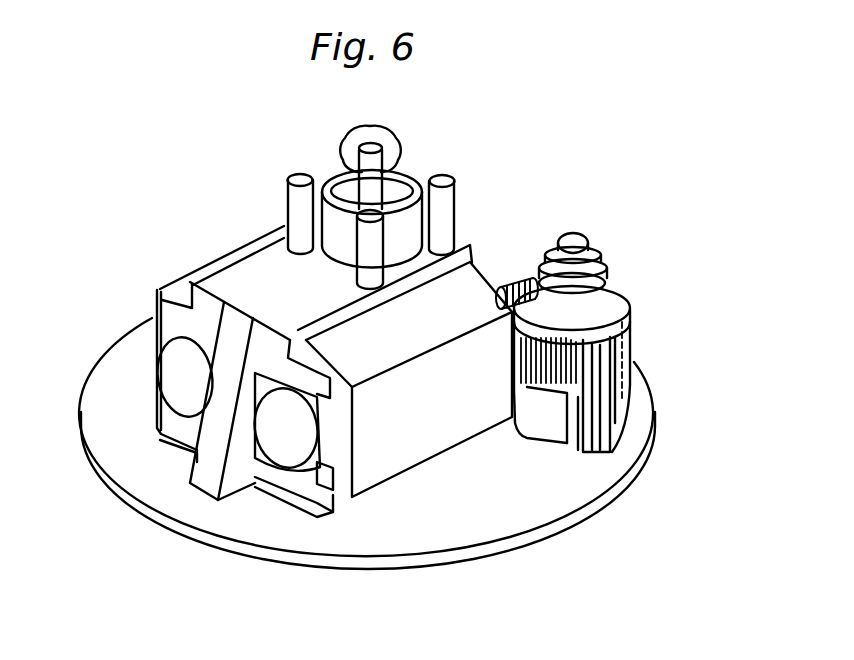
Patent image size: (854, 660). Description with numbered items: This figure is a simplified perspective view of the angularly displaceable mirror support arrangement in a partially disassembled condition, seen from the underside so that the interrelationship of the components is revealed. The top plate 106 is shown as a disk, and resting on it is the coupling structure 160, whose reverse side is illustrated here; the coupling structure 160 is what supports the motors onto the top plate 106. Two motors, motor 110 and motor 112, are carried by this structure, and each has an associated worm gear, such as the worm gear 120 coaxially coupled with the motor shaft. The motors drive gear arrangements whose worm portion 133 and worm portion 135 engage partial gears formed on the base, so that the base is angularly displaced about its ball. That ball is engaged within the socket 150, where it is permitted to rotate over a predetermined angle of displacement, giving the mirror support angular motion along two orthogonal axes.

The top plate 106 is at (535, 510).
The motor 110 is at (414, 433).
The motor 112 is at (182, 380).
The worm gear 120 is at (509, 283).
The worm portion 133 is at (590, 234).
The worm portion 135 is at (397, 155).
The socket 150 is at (337, 166).
The coupling structure 160 is at (210, 452).